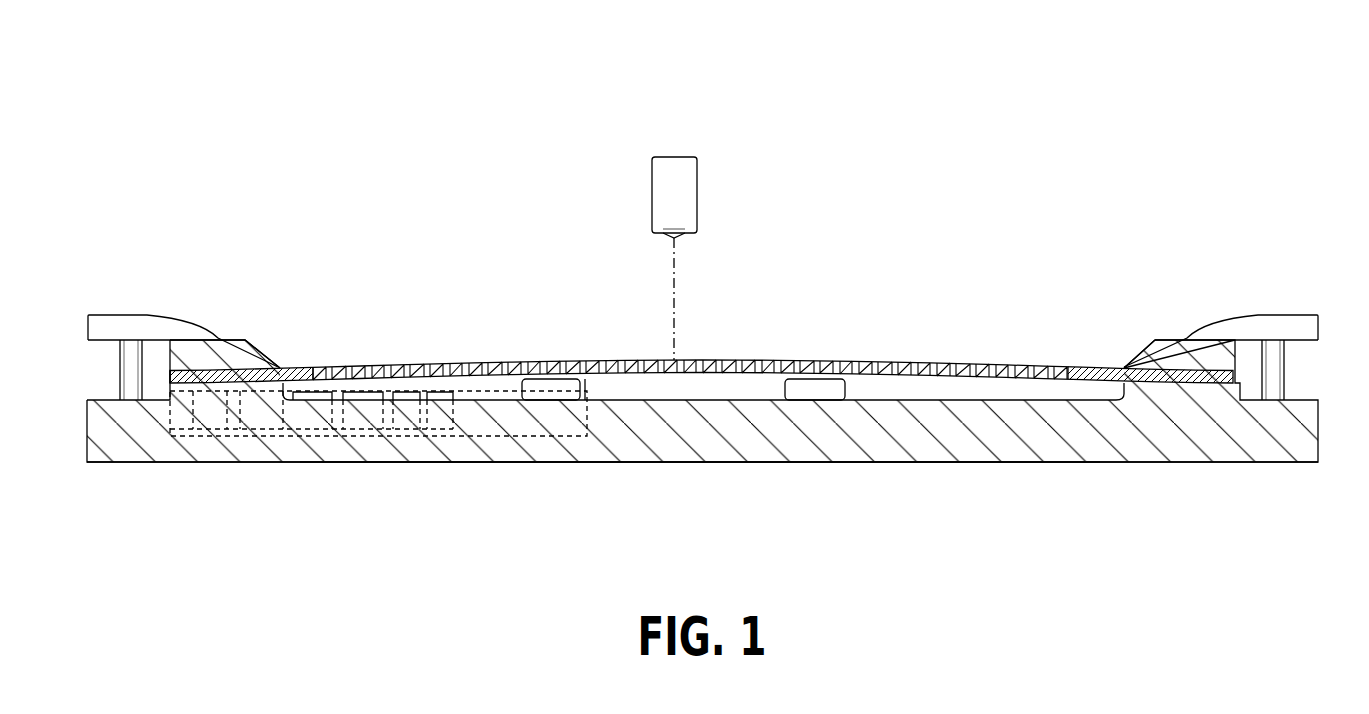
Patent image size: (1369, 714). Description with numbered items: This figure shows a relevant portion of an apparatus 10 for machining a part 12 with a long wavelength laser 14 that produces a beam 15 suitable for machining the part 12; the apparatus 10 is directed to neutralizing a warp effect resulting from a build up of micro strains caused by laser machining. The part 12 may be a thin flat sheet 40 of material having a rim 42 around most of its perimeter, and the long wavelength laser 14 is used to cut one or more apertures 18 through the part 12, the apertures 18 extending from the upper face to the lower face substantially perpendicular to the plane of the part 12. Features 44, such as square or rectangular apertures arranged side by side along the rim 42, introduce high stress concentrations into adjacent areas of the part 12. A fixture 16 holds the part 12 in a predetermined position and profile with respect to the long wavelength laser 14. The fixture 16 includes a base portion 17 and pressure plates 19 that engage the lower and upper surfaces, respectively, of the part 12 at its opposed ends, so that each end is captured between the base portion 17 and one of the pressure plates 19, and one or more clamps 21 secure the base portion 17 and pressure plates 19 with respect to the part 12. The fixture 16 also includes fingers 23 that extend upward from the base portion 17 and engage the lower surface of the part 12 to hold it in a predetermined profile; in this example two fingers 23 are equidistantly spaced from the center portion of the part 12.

The apparatus 10 is at (352, 118).
The part 12 is at (1100, 356).
The long wavelength laser 14 is at (697, 183).
The beam 15 is at (675, 285).
The fixture 16 is at (1110, 481).
The base portion 17 is at (737, 462).
The apertures 18 is at (554, 360).
The pressure plates 19 is at (236, 340).
The clamps 21 is at (121, 315).
The fingers 23 is at (522, 381).
The thin flat sheet 40 is at (300, 370).
The rim 42 is at (497, 437).
The features 44 is at (350, 434).